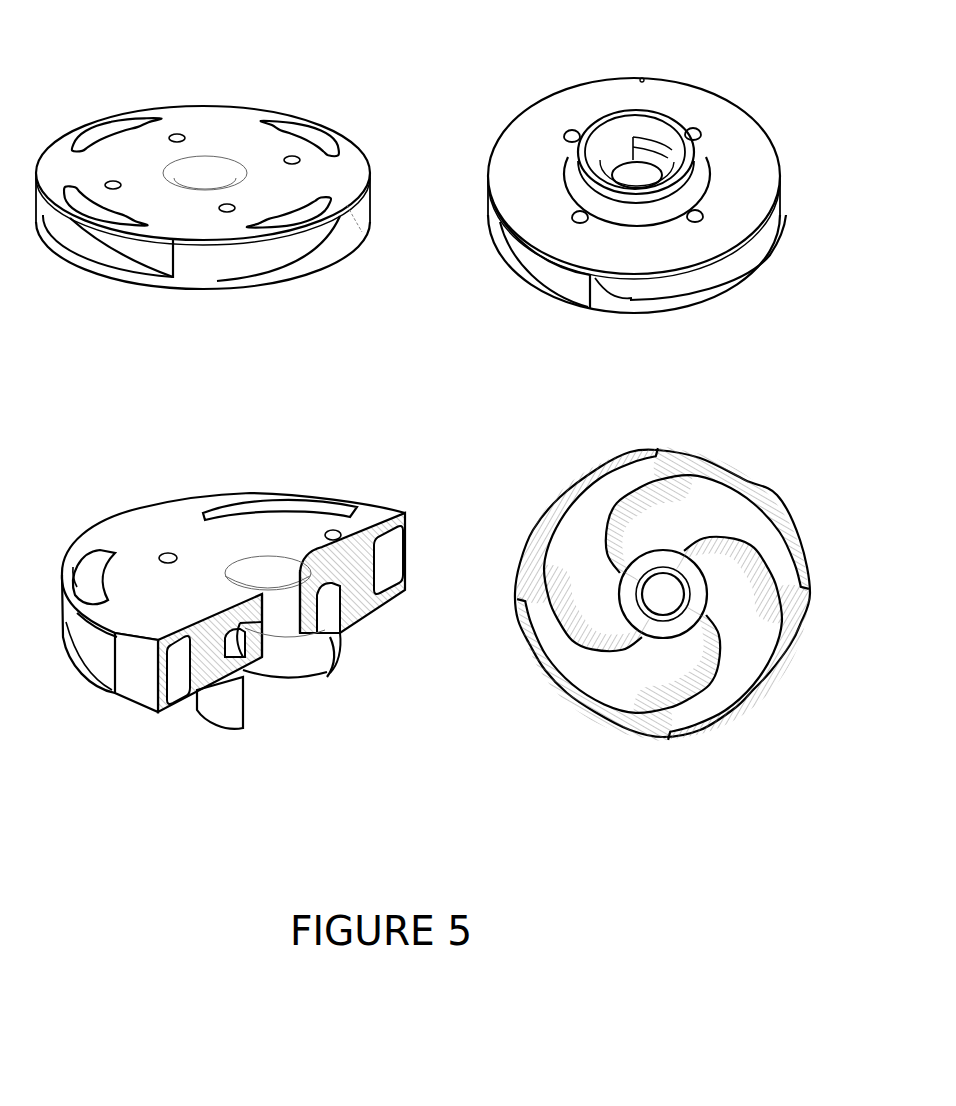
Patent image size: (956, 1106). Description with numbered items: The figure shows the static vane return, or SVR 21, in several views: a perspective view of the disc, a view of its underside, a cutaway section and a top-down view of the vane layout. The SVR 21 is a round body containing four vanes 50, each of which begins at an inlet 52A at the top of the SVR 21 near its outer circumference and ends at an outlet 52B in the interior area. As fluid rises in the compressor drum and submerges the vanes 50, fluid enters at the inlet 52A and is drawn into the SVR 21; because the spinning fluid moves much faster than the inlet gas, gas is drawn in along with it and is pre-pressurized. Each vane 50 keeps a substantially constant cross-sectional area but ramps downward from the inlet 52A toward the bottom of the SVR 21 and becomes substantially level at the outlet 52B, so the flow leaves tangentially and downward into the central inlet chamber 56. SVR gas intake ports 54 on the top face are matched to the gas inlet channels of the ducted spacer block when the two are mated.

The static vane return 21 is at (72, 34).
The vane 50 is at (627, 665).
The inlet 52A is at (206, 266).
The outlet 52B is at (604, 160).
The SVR gas intake port 54 is at (319, 122).
The central inlet chamber 56 is at (279, 700).